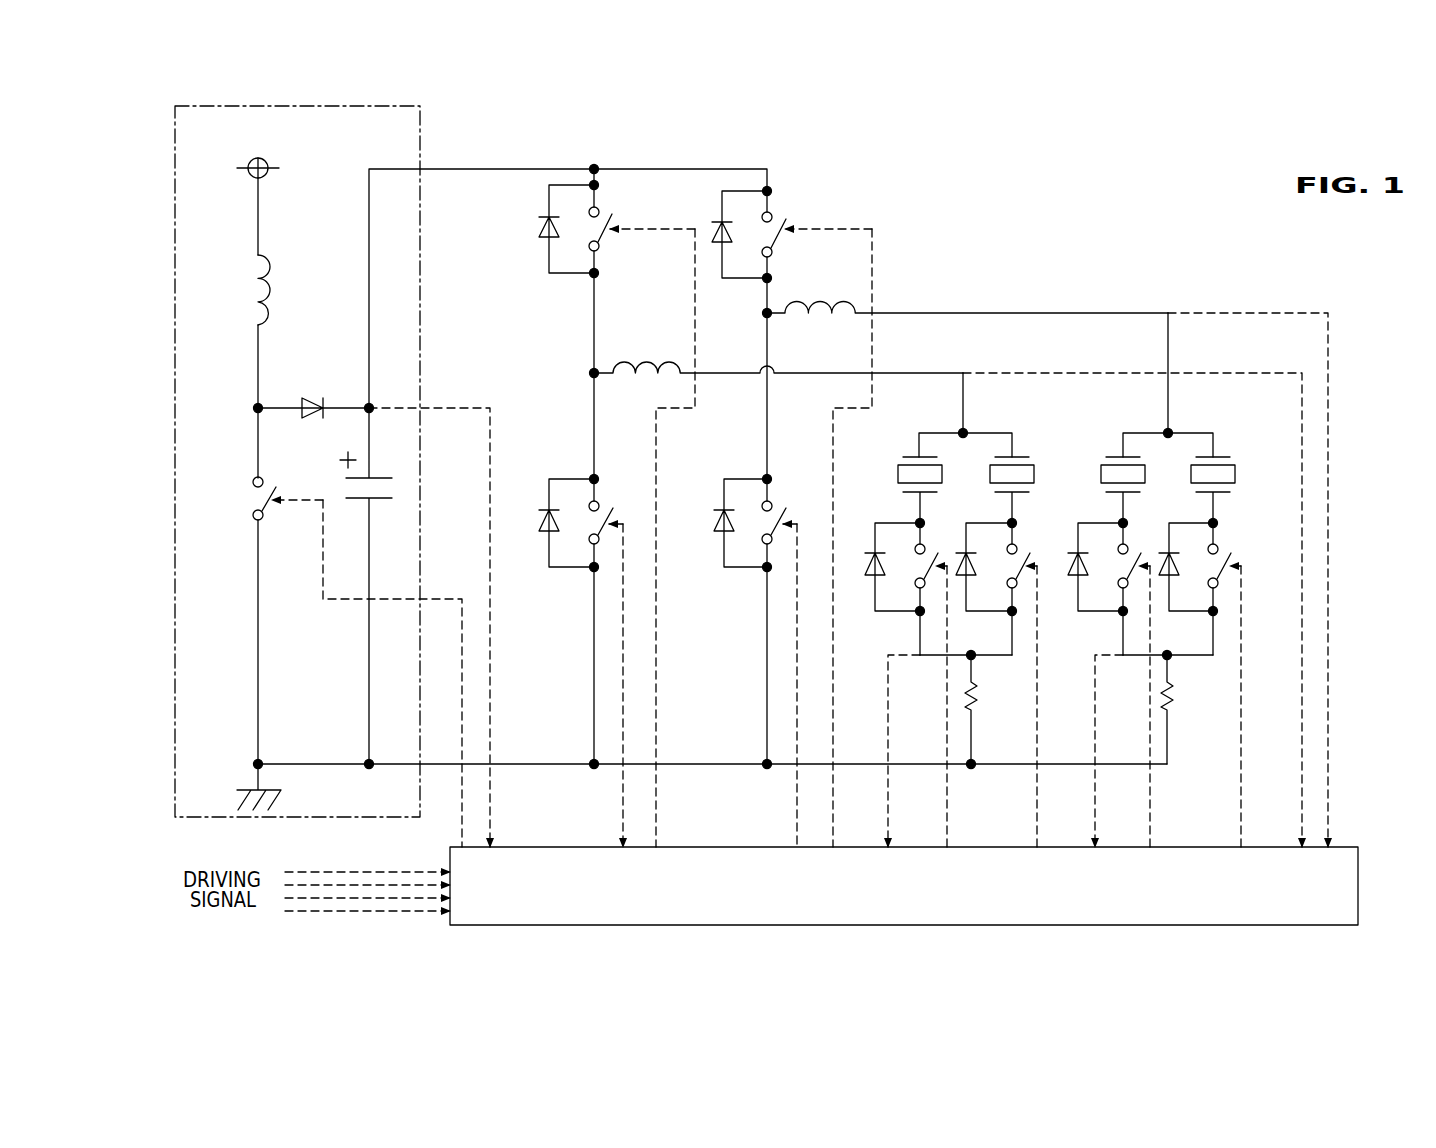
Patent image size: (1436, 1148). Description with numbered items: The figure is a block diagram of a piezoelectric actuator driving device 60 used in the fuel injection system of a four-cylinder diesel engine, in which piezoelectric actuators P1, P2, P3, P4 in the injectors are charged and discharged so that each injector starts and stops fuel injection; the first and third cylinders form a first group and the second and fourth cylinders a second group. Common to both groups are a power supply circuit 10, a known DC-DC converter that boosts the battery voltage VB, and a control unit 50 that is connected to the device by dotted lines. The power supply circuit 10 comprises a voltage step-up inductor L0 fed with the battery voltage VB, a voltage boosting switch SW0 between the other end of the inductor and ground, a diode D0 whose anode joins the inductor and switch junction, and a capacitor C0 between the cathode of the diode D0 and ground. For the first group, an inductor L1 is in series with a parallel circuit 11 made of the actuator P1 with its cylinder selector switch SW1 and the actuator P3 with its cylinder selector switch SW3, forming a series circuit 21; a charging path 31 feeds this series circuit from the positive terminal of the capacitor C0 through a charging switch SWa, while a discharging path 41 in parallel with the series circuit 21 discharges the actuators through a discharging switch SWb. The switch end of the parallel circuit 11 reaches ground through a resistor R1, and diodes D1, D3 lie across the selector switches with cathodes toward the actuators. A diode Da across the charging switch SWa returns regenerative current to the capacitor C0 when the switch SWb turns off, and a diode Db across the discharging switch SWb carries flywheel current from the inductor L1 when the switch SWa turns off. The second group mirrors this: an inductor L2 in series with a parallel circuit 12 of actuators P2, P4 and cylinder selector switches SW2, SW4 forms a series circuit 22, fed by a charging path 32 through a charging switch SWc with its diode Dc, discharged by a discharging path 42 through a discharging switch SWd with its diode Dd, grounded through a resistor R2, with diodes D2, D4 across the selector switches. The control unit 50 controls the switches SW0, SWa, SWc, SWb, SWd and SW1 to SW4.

The power supply circuit 10 is at (420, 120).
The parallel circuit 11 is at (987, 415).
The parallel circuit 12 is at (1190, 415).
The series circuit 21 is at (900, 366).
The series circuit 22 is at (1092, 306).
The charging path 31 is at (615, 293).
The charging path 32 is at (835, 217).
The discharging path 41 is at (570, 451).
The discharging path 42 is at (750, 451).
The control unit 50 is at (975, 847).
The piezoelectric actuator driving device 60 is at (1173, 207).
The battery voltage VB is at (258, 156).
The voltage step-up inductor L0 is at (283, 280).
The diode D0 is at (320, 398).
The voltage boosting switch SW0 is at (266, 478).
The capacitor C0 is at (385, 479).
The charging switch SWa is at (627, 198).
The diode Da is at (540, 230).
The charging switch SWc is at (801, 203).
The diode Dc is at (712, 234).
The inductor L1 is at (659, 352).
The inductor L2 is at (826, 292).
The discharging switch SWb is at (628, 492).
The diode Db is at (540, 524).
The discharging switch SWd is at (801, 492).
The diode Dd is at (714, 524).
The piezoelectric actuator P1 is at (903, 459).
The piezoelectric actuator P2 is at (1106, 459).
The piezoelectric actuator P3 is at (1031, 459).
The piezoelectric actuator P4 is at (1234, 459).
The cylinder selector switch SW1 is at (953, 537).
The cylinder selector switch SW2 is at (1156, 537).
The cylinder selector switch SW3 is at (1045, 537).
The cylinder selector switch SW4 is at (1231, 548).
The diode D1 is at (872, 583).
The diode D2 is at (1075, 583).
The diode D3 is at (965, 583).
The diode D4 is at (1167, 583).
The resistor R1 is at (977, 697).
The resistor R2 is at (1173, 697).